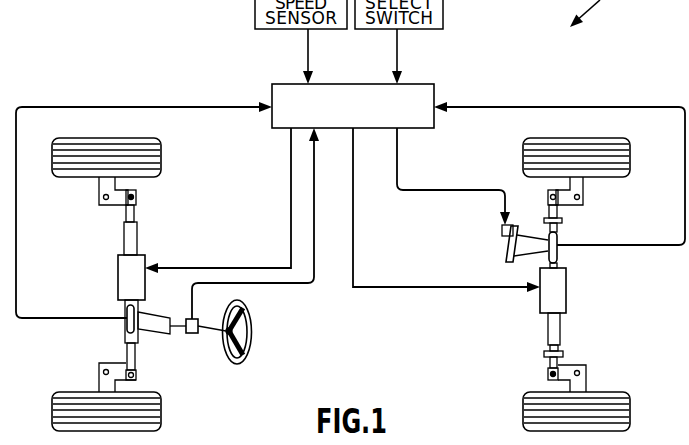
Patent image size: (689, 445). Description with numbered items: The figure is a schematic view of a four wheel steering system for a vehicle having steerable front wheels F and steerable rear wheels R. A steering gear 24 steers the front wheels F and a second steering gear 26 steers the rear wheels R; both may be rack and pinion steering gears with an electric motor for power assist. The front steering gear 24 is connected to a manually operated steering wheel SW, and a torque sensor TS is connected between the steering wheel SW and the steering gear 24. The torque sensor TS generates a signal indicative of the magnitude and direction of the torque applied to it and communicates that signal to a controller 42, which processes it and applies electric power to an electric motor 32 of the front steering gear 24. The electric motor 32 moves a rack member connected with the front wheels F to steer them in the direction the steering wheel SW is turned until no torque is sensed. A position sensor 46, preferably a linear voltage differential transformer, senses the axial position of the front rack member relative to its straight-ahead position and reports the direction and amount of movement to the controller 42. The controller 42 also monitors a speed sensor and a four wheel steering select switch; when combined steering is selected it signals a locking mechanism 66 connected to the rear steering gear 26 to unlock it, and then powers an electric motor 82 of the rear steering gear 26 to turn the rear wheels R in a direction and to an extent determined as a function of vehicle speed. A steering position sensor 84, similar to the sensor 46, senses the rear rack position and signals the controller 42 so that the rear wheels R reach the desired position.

The controller 42 is at (420, 92).
The steering gear 24 is at (123, 284).
The electric motor 32 is at (118, 276).
The position sensor 46 is at (120, 328).
The steering gear 26 is at (590, 284).
The electric motor 82 is at (555, 290).
The steering position sensor 84 is at (562, 239).
The locking mechanism 66 is at (498, 252).
The front wheels F is at (160, 160).
The rear wheels R is at (613, 155).
The torque sensor TS is at (192, 333).
The steering wheel SW is at (250, 335).